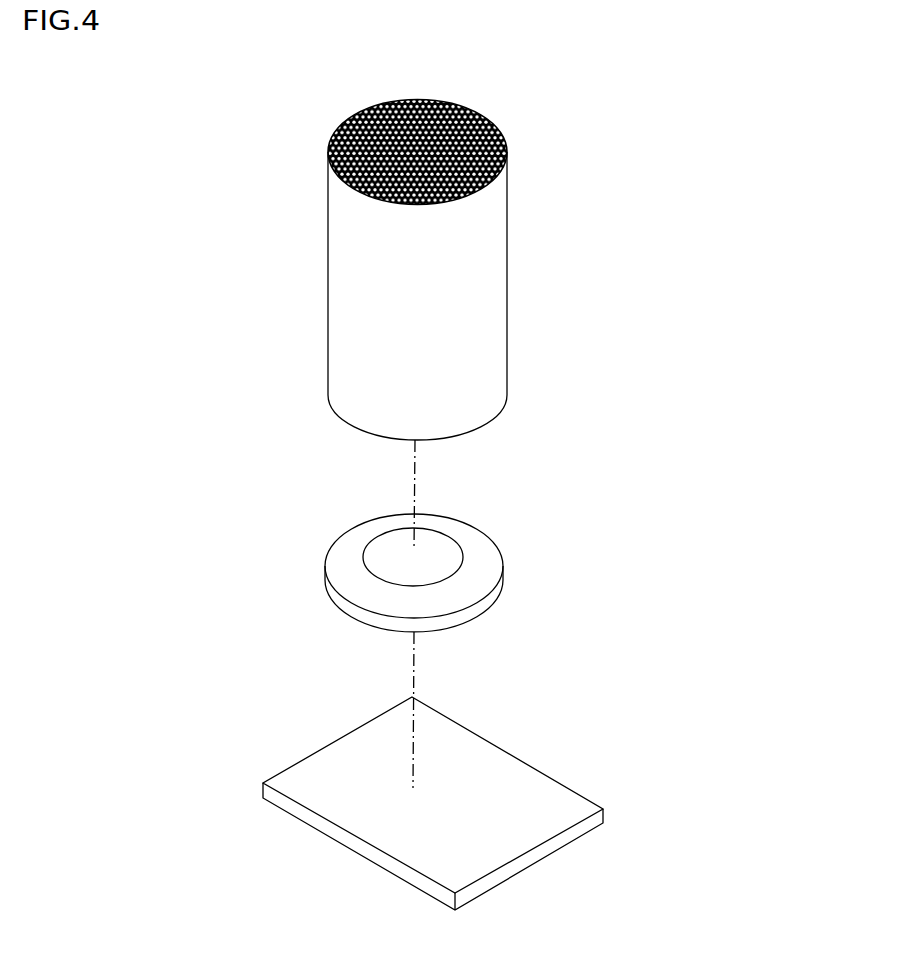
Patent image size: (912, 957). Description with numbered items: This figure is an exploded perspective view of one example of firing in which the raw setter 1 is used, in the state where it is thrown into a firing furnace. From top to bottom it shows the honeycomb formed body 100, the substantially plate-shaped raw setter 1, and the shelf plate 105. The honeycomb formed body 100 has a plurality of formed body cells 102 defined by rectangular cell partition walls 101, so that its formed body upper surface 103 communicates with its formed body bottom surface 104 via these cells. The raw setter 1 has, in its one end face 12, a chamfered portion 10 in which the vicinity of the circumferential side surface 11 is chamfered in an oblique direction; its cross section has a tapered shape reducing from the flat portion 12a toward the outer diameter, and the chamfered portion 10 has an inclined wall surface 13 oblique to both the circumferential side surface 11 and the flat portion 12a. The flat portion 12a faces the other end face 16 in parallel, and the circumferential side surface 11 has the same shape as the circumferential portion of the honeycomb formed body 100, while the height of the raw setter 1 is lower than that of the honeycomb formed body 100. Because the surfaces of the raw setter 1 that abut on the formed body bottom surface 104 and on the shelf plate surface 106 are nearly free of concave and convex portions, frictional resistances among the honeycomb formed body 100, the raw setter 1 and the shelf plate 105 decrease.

The raw setter 1 is at (455, 695).
The chamfered portion 10 is at (361, 566).
The circumferential side surface 11 is at (342, 607).
The one end face 12 is at (395, 584).
The flat portion 12a is at (448, 562).
The inclined wall surface 13 is at (340, 553).
The other end face 16 is at (470, 622).
The honeycomb formed body 100 is at (475, 236).
The cell partition walls 101 is at (449, 118).
The formed body cells 102 is at (417, 118).
The formed body upper surface 103 is at (473, 108).
The formed body bottom surface 104 is at (477, 430).
The shelf plate 105 is at (453, 803).
The shelf plate surface 106 is at (307, 764).